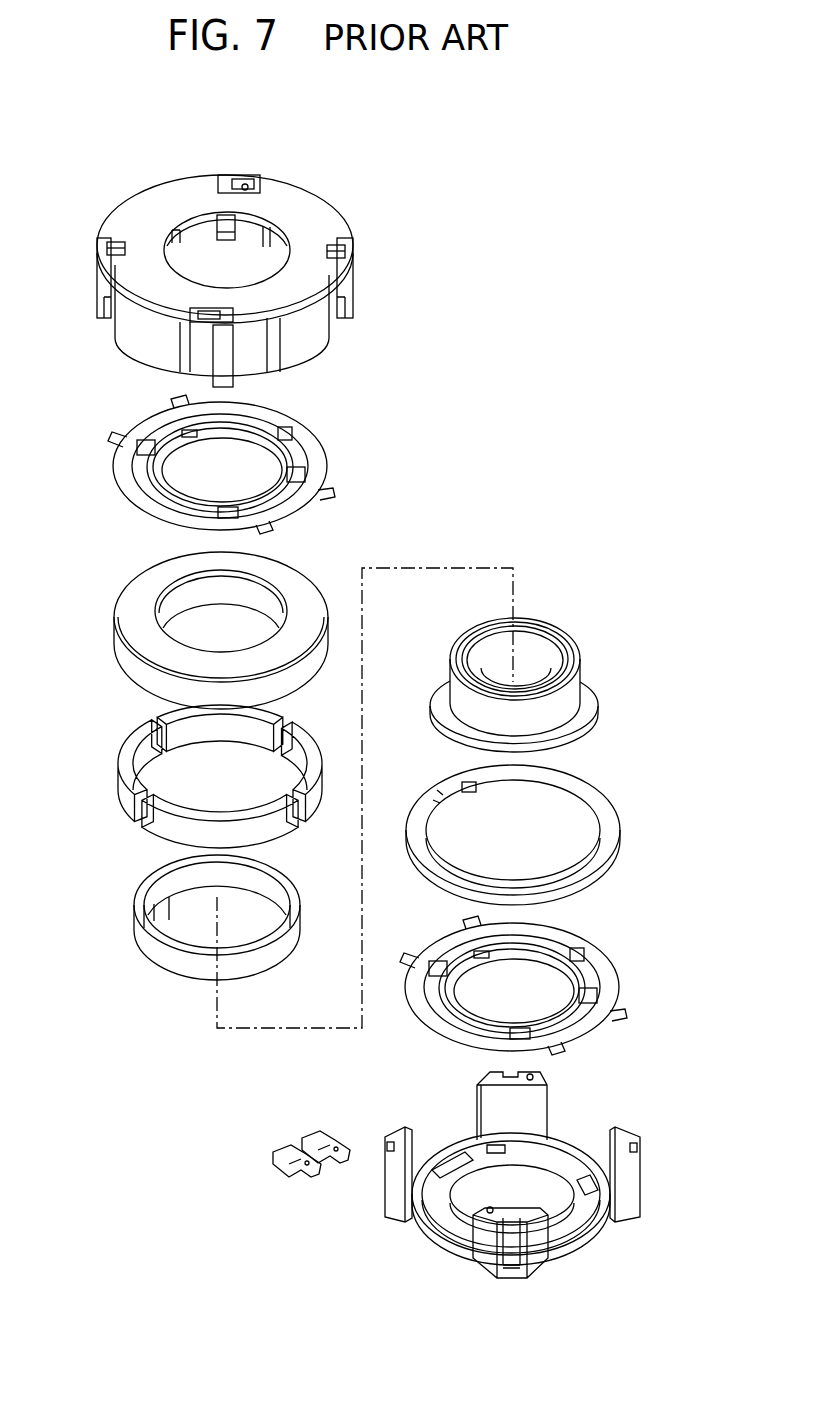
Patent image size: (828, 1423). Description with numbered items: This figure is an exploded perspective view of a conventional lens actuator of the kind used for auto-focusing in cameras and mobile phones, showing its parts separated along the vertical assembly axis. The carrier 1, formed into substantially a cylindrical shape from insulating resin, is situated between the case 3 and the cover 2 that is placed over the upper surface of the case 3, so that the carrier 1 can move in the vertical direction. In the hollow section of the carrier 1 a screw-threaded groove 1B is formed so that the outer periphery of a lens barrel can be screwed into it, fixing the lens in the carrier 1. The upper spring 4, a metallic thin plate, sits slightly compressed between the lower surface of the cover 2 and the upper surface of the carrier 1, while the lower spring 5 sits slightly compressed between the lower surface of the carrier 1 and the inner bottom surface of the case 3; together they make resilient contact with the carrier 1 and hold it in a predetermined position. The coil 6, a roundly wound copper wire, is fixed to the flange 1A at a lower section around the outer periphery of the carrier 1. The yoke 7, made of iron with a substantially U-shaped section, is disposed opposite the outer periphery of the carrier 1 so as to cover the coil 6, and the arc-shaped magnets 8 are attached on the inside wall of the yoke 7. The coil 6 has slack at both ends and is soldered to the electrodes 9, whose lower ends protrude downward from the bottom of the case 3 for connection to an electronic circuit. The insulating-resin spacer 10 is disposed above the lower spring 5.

The carrier 1 is at (578, 652).
The flange 1A is at (588, 697).
The screw-threaded groove 1B is at (532, 658).
The cover 2 is at (122, 217).
The case 3 is at (603, 1238).
The upper spring 4 is at (138, 432).
The lower spring 5 is at (617, 970).
The coil 6 is at (142, 952).
The yoke 7 is at (123, 585).
The magnets 8 is at (158, 835).
The electrodes 9 is at (287, 1153).
The spacer 10 is at (613, 807).